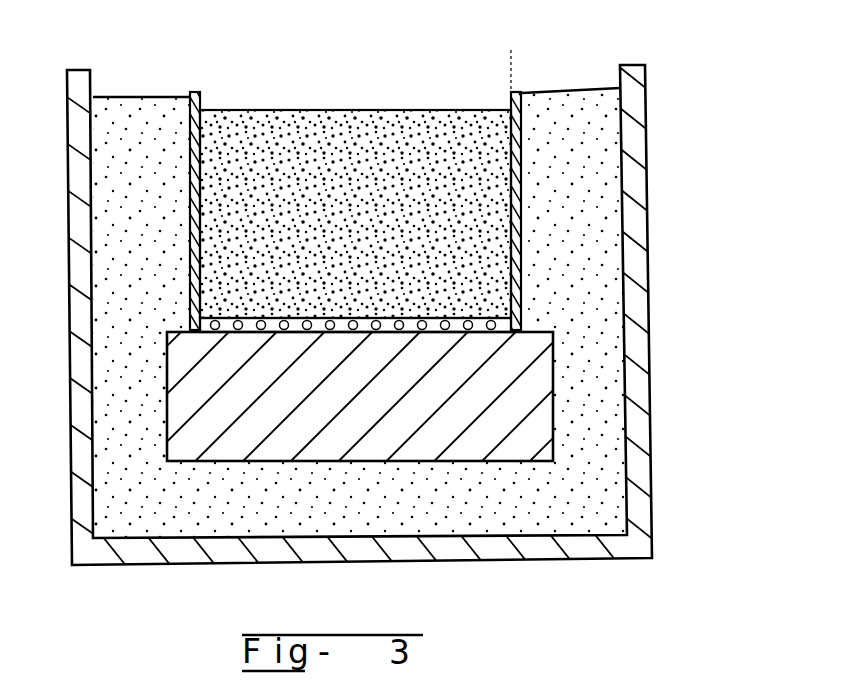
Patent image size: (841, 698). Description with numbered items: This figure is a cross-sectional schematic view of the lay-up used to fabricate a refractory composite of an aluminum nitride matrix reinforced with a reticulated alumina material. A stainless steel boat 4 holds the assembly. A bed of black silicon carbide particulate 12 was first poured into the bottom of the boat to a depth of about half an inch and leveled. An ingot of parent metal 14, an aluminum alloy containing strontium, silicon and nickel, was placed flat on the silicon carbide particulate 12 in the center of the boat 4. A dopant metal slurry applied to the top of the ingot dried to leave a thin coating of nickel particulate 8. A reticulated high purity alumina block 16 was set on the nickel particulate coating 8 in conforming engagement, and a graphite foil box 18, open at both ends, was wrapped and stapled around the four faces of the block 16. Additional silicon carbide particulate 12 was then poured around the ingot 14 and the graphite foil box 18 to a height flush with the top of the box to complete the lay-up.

The stainless steel boat 4 is at (636, 70).
The nickel particulate coating 8 is at (443, 332).
The silicon carbide particulate 12 is at (128, 117).
The ingot of parent metal 14 is at (319, 410).
The reticulated alumina material 16 is at (340, 130).
The graphite foil box 18 is at (513, 90).